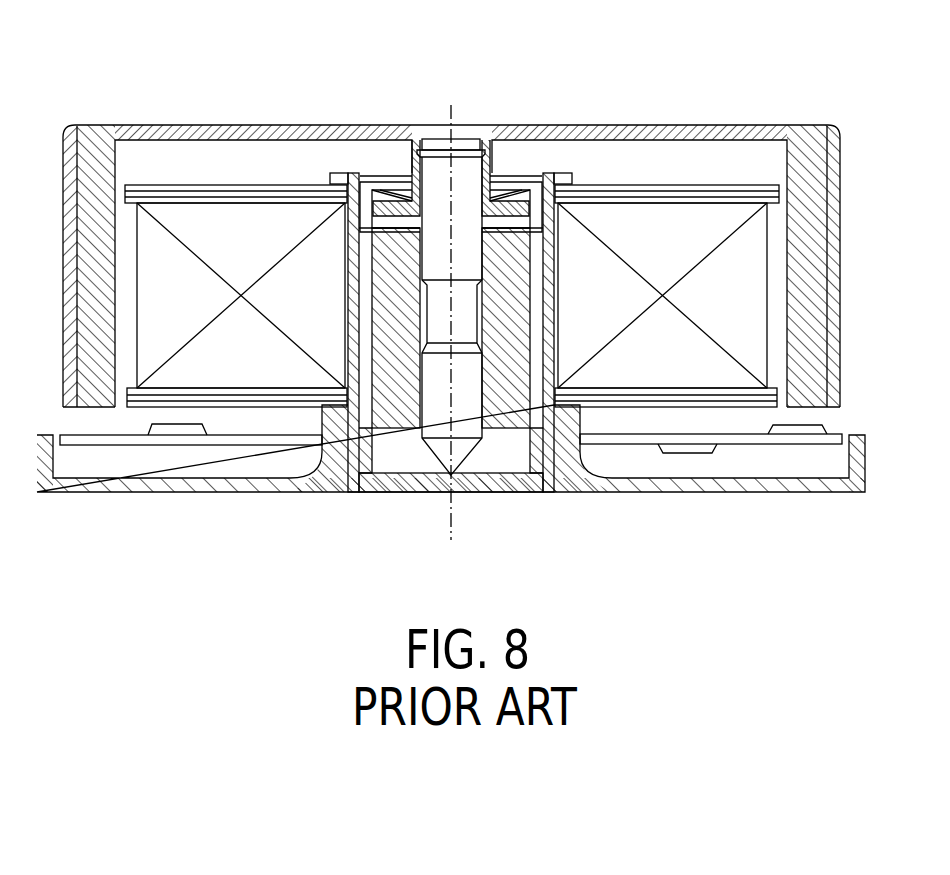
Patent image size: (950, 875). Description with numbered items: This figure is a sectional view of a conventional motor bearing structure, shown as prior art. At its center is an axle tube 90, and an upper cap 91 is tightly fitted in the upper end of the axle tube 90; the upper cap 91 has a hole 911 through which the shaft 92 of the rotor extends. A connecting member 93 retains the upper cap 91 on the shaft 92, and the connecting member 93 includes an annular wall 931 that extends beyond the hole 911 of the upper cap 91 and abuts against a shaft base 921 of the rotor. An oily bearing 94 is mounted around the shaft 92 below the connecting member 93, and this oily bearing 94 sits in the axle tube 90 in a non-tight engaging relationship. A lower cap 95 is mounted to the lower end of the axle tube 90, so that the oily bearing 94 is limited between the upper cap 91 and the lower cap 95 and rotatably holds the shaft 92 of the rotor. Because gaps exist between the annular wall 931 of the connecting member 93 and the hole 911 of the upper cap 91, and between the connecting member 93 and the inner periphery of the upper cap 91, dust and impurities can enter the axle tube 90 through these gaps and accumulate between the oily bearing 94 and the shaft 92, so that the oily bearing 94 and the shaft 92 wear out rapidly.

The axle tube 90 is at (565, 458).
The upper cap 91 is at (358, 173).
The hole 911 is at (505, 182).
The shaft 92 is at (437, 167).
The shaft base 921 is at (488, 153).
The connecting member 93 is at (548, 205).
The annular wall 931 is at (393, 175).
The oily bearing 94 is at (393, 350).
The lower cap 95 is at (382, 488).